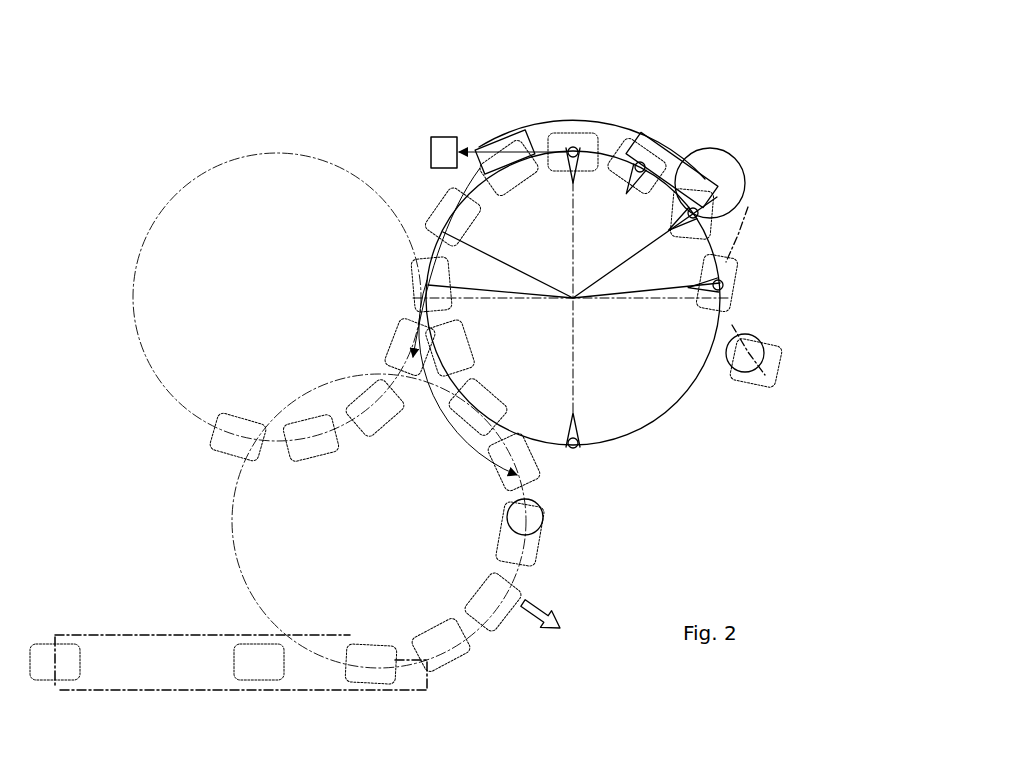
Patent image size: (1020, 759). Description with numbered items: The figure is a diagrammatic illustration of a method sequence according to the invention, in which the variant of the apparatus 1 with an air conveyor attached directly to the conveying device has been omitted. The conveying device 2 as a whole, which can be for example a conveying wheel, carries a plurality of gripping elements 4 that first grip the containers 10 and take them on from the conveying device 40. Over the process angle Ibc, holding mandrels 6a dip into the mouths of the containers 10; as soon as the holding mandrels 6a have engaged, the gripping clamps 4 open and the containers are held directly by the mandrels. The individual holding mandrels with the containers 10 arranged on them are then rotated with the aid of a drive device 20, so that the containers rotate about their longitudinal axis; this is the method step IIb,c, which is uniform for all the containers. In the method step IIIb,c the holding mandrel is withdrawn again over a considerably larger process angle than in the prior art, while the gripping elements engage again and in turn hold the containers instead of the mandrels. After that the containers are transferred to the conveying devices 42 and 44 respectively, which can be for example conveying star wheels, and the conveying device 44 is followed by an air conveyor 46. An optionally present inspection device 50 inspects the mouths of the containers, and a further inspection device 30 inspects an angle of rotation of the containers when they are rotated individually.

The apparatus 1 is at (710, 405).
The conveying device 2 is at (612, 411).
The gripping elements 4 is at (660, 190).
The holding mandrel 6a is at (637, 176).
The containers 10 is at (730, 270).
The drive device 20 is at (665, 152).
The further inspection device 30 is at (747, 358).
The conveying device 40 is at (730, 316).
The conveying device 42 is at (261, 307).
The conveying device 44 is at (262, 513).
The air conveyor 46 is at (213, 668).
The inspection device 50 is at (533, 512).
The process angle Ib,c Ibc is at (653, 272).
The method step IIb,c is at (617, 130).
The method step IIIb,c is at (462, 255).